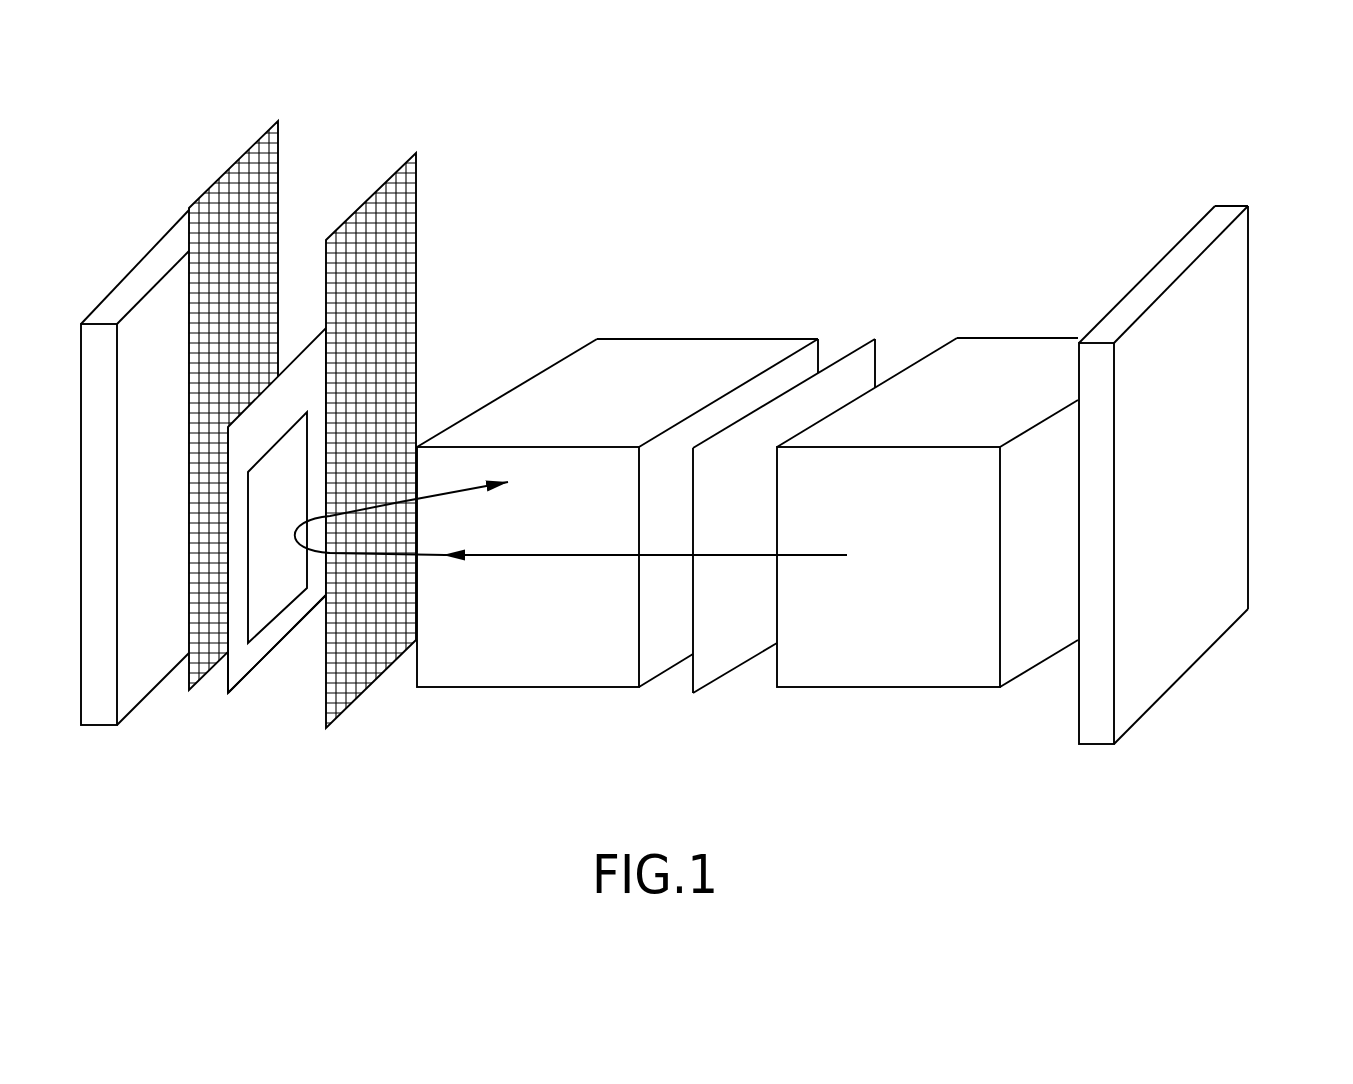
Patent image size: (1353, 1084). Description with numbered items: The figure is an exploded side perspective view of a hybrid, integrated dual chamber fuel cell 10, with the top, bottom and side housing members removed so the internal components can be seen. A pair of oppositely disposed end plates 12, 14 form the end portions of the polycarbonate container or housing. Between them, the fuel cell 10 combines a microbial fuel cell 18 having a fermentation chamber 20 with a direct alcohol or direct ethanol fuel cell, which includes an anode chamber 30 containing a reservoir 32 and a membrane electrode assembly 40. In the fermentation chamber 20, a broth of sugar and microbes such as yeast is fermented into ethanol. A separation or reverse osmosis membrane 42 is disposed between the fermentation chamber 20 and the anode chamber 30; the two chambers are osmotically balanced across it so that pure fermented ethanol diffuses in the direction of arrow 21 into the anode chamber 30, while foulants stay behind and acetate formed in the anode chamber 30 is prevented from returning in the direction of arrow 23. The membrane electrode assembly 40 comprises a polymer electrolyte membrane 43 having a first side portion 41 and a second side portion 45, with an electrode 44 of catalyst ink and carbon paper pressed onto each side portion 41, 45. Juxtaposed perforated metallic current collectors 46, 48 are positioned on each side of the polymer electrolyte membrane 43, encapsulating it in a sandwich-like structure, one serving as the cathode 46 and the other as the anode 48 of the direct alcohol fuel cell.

The hybrid integrated dual chamber fuel cell 10 is at (842, 203).
The end plate 12 is at (1235, 277).
The end plate 14 is at (127, 288).
The microbial fuel cell 18 is at (962, 717).
The fermentation chamber 20 is at (1020, 395).
The arrow 21 is at (822, 556).
The arrow 23 is at (474, 485).
The anode chamber 30 is at (477, 712).
The reservoir 32 is at (656, 395).
The membrane electrode assembly 40 is at (213, 713).
The first side portion 41 is at (250, 671).
The reverse osmosis membrane 42 is at (865, 368).
The polymer electrolyte membrane 43 is at (303, 385).
The electrode 44 is at (267, 628).
The second side portion 45 is at (224, 679).
The cathode current collector 46 is at (263, 167).
The anode current collector 48 is at (400, 268).